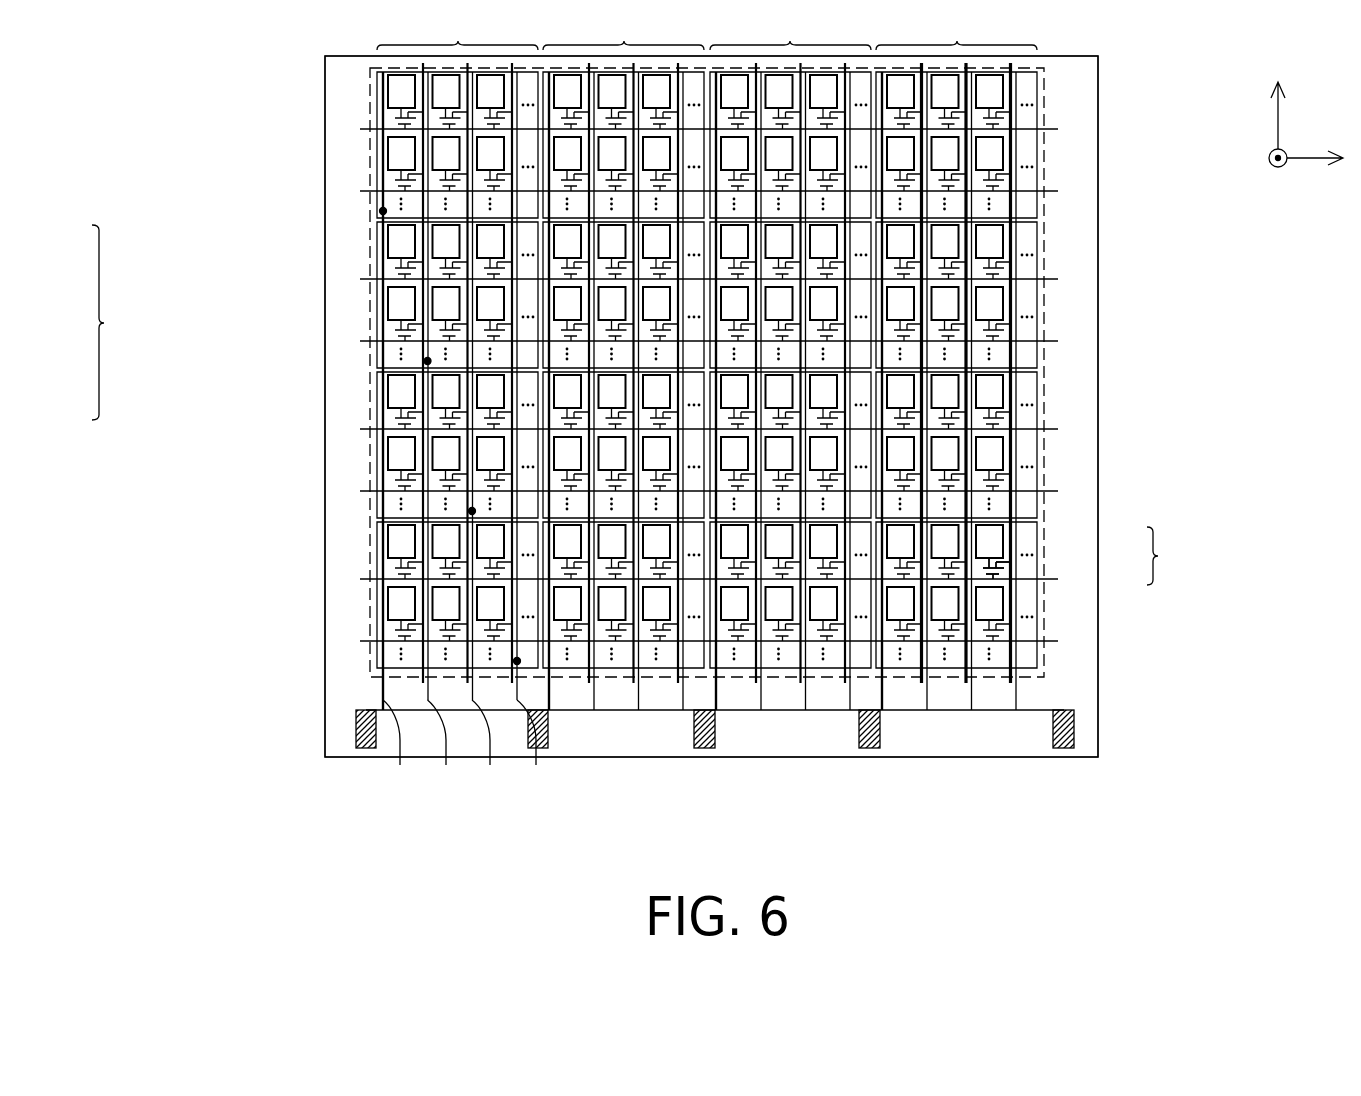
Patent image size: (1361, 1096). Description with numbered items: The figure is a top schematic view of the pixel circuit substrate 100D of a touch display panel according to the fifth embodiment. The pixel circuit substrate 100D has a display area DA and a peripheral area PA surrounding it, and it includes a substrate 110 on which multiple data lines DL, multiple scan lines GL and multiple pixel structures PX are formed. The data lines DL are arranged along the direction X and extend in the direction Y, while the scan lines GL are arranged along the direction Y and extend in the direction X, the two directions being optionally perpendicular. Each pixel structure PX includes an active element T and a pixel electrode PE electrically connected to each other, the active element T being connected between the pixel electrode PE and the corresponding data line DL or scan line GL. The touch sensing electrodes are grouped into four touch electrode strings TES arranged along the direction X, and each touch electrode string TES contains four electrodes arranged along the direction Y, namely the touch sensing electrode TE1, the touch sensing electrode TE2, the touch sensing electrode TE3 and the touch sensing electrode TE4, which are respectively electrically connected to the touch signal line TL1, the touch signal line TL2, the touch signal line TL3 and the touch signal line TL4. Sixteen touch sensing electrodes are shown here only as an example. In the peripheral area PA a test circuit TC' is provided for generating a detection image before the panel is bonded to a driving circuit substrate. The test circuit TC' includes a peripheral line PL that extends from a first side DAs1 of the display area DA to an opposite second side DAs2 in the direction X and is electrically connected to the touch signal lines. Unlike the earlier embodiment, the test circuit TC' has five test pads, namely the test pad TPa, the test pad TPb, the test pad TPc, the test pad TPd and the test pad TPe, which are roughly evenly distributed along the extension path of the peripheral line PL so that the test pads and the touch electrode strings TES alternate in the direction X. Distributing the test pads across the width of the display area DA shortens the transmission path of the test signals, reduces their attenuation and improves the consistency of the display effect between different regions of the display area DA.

The pixel circuit substrate 100D is at (701, 410).
The substrate 110 is at (1099, 315).
The peripheral area PA is at (1093, 90).
The display area DA is at (1058, 67).
The first side of the display area DAs1 is at (332, 116).
The second side of the display area DAs2 is at (1081, 243).
The scan line GL is at (1052, 490).
The data line DL is at (1012, 676).
The peripheral line PL is at (988, 710).
The touch sensing electrode TE1 is at (377, 173).
The touch sensing electrode TE2 is at (377, 303).
The touch sensing electrode TE3 is at (377, 453).
The touch sensing electrode TE4 is at (377, 564).
The touch signal line TL1 is at (400, 503).
The touch signal line TL2 is at (443, 578).
The touch signal line TL3 is at (489, 653).
The touch signal line TL4 is at (534, 728).
The test pad TPa is at (357, 736).
The test pad TPb is at (1075, 733).
The test pad TPc is at (716, 740).
The test pad TPd is at (549, 733).
The test pad TPe is at (881, 740).
The touch electrode string TES is at (707, 32).
The pixel structure PX is at (1083, 555).
The pixel electrode PE is at (1005, 541).
The active element T is at (1024, 577).
The test circuit TC' is at (92, 324).